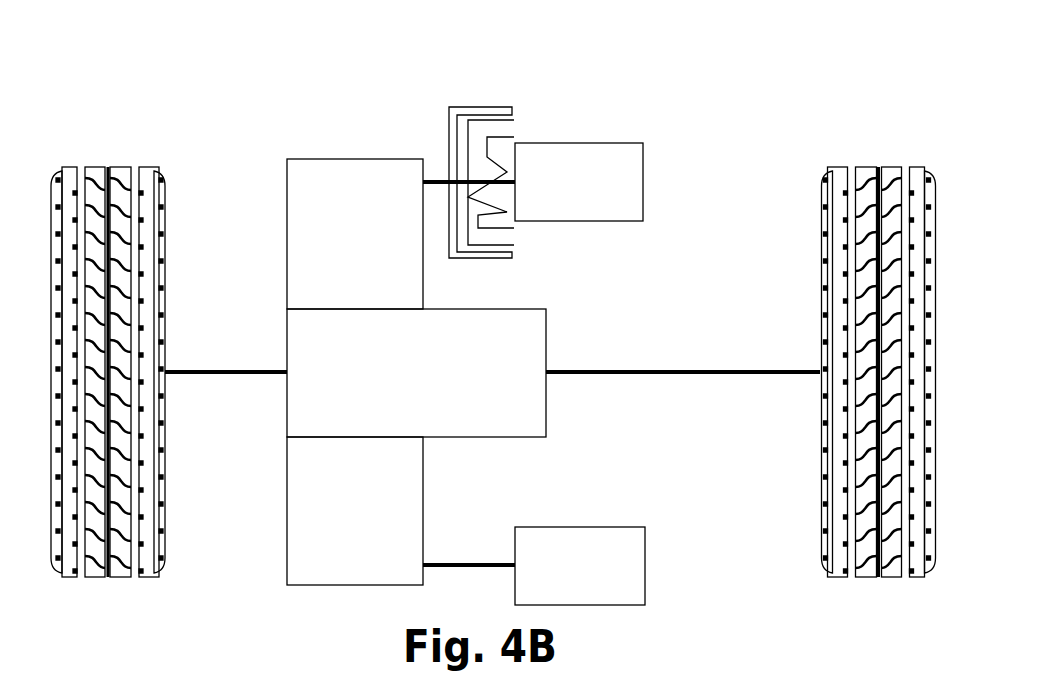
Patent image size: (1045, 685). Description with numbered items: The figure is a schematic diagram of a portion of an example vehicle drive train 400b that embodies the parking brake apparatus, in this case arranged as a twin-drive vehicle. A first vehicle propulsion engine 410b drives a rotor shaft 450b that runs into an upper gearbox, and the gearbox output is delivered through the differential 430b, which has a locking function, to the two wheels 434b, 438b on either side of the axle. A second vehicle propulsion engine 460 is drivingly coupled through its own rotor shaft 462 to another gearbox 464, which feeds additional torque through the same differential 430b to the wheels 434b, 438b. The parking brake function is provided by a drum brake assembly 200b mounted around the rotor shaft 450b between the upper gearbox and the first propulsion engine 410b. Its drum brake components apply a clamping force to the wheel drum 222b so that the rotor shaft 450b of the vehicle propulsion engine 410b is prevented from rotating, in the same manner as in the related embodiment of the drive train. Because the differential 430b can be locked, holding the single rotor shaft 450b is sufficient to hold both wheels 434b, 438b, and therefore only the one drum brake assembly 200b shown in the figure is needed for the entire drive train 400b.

The drum brake assembly 200b is at (488, 82).
The wheel drum 222b is at (500, 108).
The rotor shaft 450b is at (441, 180).
The vehicle propulsion engine 410b is at (623, 143).
The differential 430b is at (546, 340).
The wheel 434b is at (166, 470).
The wheel 438b is at (820, 490).
The vehicle drive train 400b is at (762, 122).
The second vehicle propulsion engine 460 is at (578, 527).
The rotor shaft 462 is at (472, 562).
The gearbox 464 is at (287, 552).